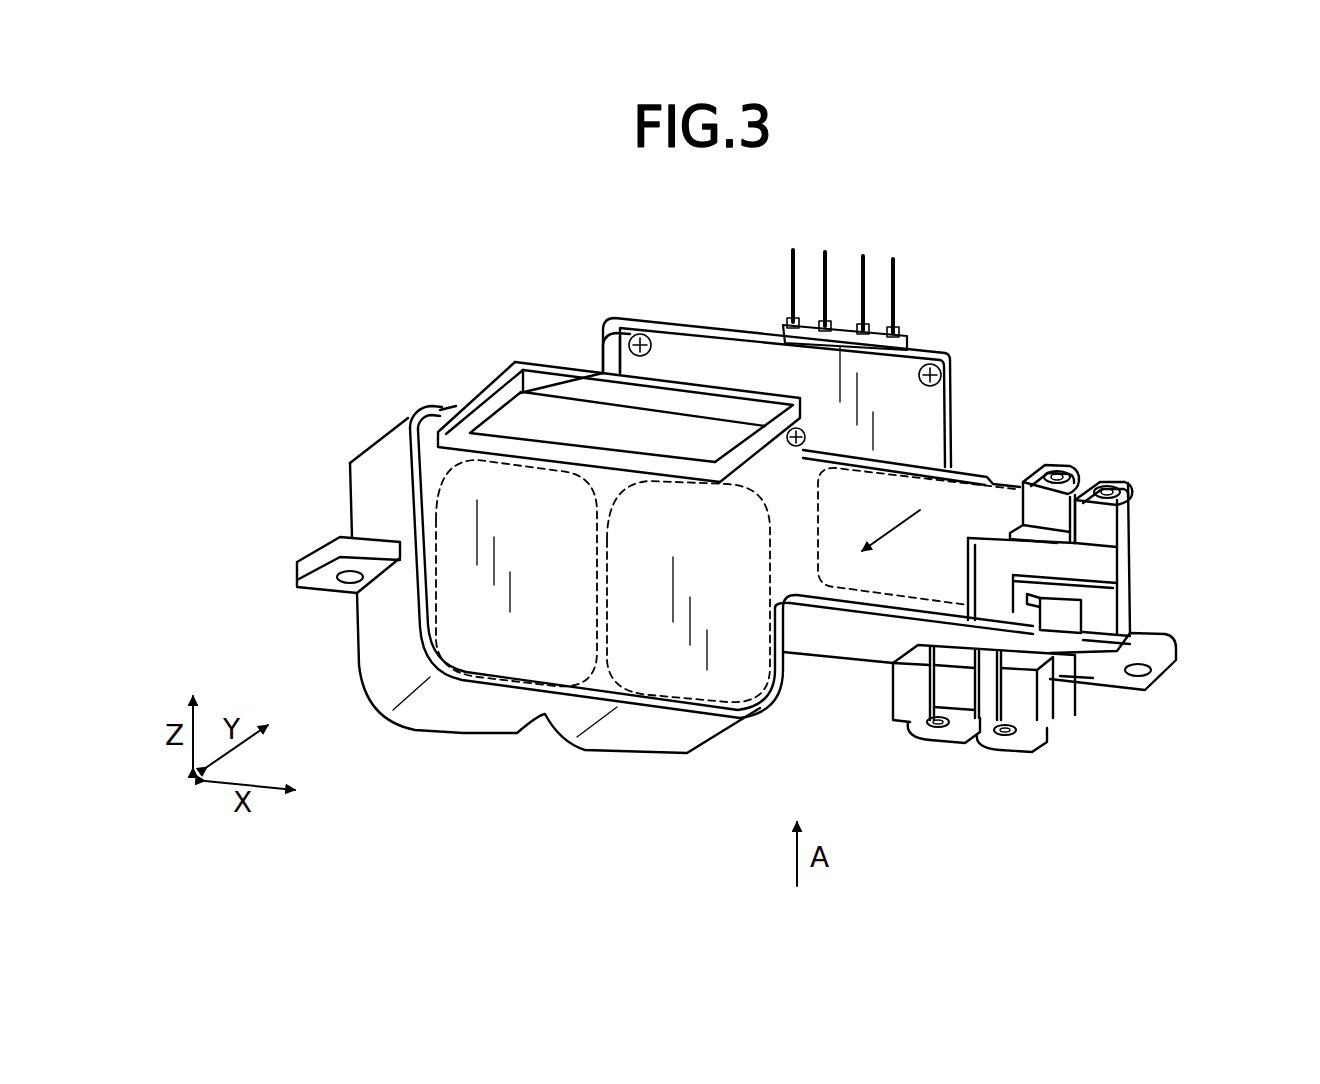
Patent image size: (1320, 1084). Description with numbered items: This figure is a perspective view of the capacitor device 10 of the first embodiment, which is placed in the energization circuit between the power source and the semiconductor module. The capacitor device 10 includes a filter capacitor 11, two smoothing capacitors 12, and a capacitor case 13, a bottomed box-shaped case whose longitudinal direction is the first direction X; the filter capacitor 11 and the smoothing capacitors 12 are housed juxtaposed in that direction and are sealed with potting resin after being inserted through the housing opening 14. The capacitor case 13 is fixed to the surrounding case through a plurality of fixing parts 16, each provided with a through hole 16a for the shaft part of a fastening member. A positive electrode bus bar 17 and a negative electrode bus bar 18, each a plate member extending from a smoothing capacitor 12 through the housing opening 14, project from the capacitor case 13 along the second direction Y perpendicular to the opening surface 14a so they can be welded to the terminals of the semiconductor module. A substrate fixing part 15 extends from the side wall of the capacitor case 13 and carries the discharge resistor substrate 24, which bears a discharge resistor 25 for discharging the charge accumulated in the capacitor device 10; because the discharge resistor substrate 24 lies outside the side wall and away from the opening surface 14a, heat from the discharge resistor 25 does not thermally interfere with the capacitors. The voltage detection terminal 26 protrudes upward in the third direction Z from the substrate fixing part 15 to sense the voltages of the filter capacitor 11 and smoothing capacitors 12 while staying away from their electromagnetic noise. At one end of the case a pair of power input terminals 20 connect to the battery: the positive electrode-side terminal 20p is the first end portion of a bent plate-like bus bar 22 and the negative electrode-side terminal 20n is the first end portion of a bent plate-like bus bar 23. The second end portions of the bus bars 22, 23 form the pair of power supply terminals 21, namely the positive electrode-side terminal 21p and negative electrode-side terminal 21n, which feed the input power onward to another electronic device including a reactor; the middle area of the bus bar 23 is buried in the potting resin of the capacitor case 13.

The capacitor device 10 is at (553, 760).
The filter capacitor 11 is at (885, 610).
The smoothing capacitor 12 is at (487, 692).
The capacitor case 13 is at (812, 660).
The housing opening 14 is at (739, 534).
The opening surface 14a is at (433, 453).
The substrate fixing part 15 is at (600, 352).
The fixing part 16 is at (733, 622).
The through hole 16a is at (350, 580).
The positive electrode bus bar 17 is at (619, 382).
The negative electrode bus bar 18 is at (660, 393).
The power input terminals 20 is at (1100, 451).
The negative electrode-side terminal 20n is at (1058, 463).
The positive electrode-side terminal 20p is at (1130, 478).
The power supply terminals 21 is at (976, 758).
The positive electrode-side terminal 21p is at (947, 734).
The negative electrode-side terminal 21n is at (1012, 770).
The bus bar 22 is at (1132, 567).
The bus bar 23 is at (1066, 652).
The discharge resistor substrate 24 is at (836, 392).
The discharge resistor 25 is at (923, 410).
The voltage detection terminal 26 is at (913, 252).